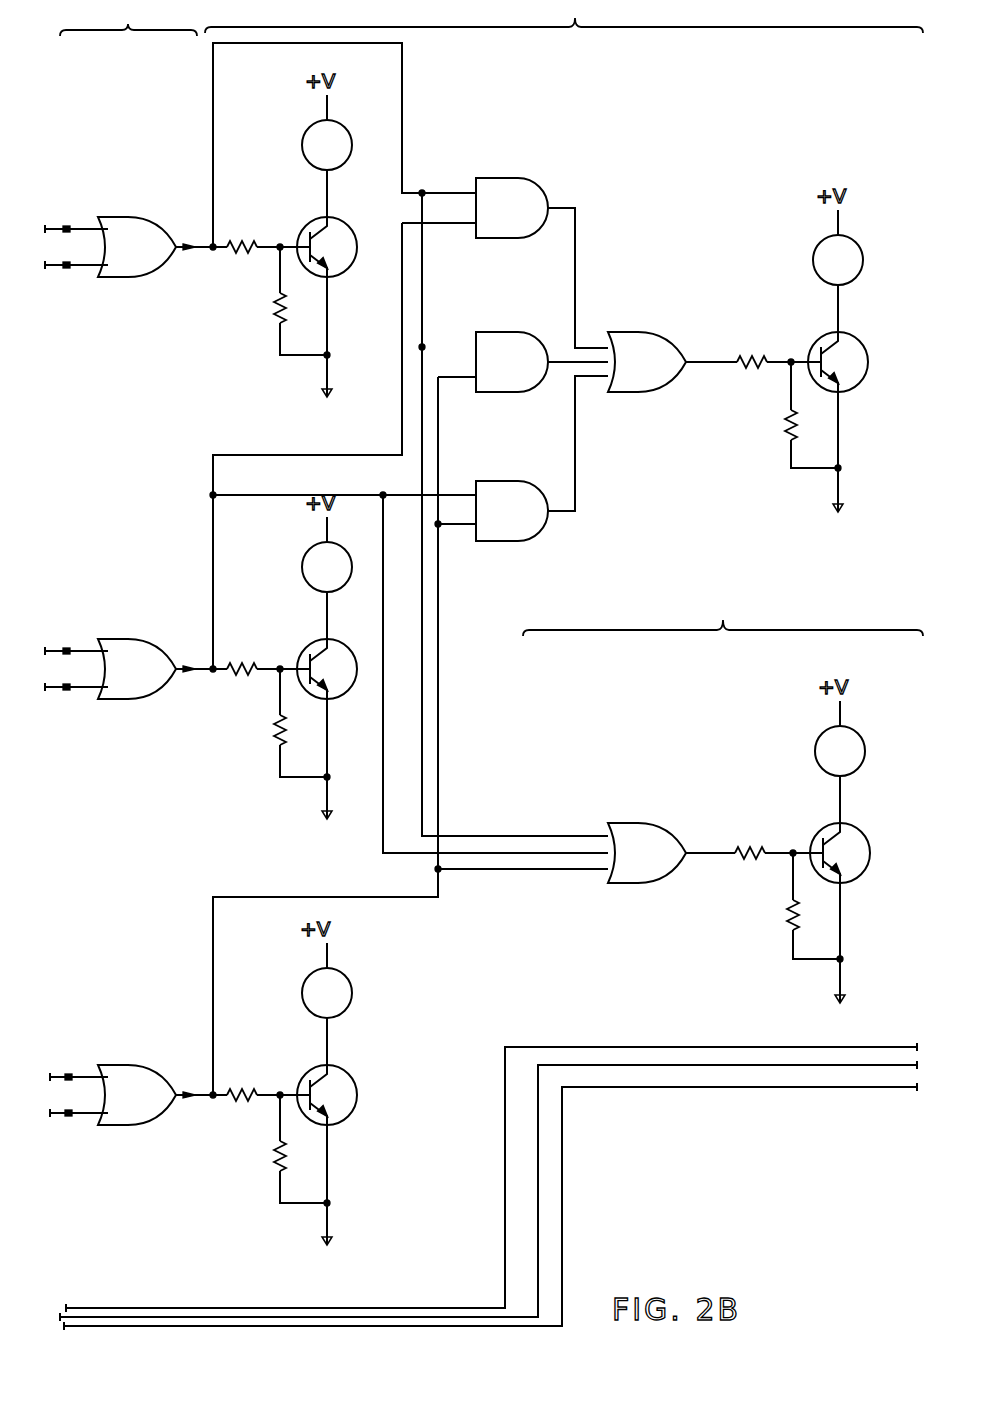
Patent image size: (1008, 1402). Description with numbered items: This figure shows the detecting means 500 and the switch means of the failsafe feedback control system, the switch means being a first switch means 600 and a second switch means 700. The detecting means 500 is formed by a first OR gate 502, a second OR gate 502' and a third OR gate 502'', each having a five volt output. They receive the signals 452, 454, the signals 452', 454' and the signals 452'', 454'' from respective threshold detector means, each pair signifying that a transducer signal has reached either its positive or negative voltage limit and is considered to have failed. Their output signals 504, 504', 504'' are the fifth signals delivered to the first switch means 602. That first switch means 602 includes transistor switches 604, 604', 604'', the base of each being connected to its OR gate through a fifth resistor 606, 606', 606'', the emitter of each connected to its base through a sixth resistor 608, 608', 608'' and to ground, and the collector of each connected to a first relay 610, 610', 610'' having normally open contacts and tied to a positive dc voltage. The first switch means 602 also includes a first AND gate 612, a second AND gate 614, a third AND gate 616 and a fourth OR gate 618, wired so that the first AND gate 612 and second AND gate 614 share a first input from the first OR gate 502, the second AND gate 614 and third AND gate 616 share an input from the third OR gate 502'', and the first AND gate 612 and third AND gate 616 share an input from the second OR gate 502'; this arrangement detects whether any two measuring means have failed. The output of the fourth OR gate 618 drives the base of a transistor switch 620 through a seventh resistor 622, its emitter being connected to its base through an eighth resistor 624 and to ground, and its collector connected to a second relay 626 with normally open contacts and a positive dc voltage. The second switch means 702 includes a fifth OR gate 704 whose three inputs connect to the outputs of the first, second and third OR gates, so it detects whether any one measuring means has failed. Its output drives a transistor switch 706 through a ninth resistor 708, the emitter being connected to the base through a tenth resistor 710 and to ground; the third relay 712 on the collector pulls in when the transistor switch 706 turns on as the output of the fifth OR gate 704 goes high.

The detecting means 500 is at (128, 18).
The first switch means 600 is at (564, 16).
The first switch means 602 is at (672, 168).
The second switch means 700 is at (723, 614).
The second switch means 702 is at (773, 674).
The signal 452 is at (76, 199).
The signal 454 is at (76, 293).
The first OR gate 502 is at (137, 221).
The output signal 504 is at (189, 277).
The fifth resistor 606 is at (248, 215).
The sixth resistor 608 is at (268, 301).
The transistor switch 604 is at (332, 283).
The first relay 610 is at (297, 128).
The signal 452' is at (76, 628).
The signal 454' is at (80, 718).
The second OR gate 502' is at (137, 642).
The output signal 504' is at (184, 700).
The fifth resistor 606' is at (248, 637).
The sixth resistor 608' is at (268, 723).
The transistor switch 604' is at (332, 705).
The first relay 610' is at (290, 558).
The signal 452'' is at (82, 1057).
The signal 454'' is at (87, 1144).
The third OR gate 502'' is at (137, 1072).
The output signal 504'' is at (183, 1126).
The fifth resistor 606'' is at (248, 1064).
The sixth resistor 608'' is at (266, 1150).
The transistor switch 604'' is at (367, 1131).
The first relay 610'' is at (290, 976).
The first AND gate 612 is at (503, 178).
The second AND gate 614 is at (503, 332).
The third AND gate 616 is at (508, 481).
The fourth OR gate 618 is at (638, 332).
The seventh resistor 622 is at (752, 355).
The eighth resistor 624 is at (788, 432).
The transistor switch 620 is at (862, 343).
The second relay 626 is at (818, 243).
The fifth OR gate 704 is at (638, 823).
The ninth resistor 708 is at (751, 848).
The tenth resistor 710 is at (790, 914).
The transistor switch 706 is at (864, 834).
The third relay 712 is at (820, 732).